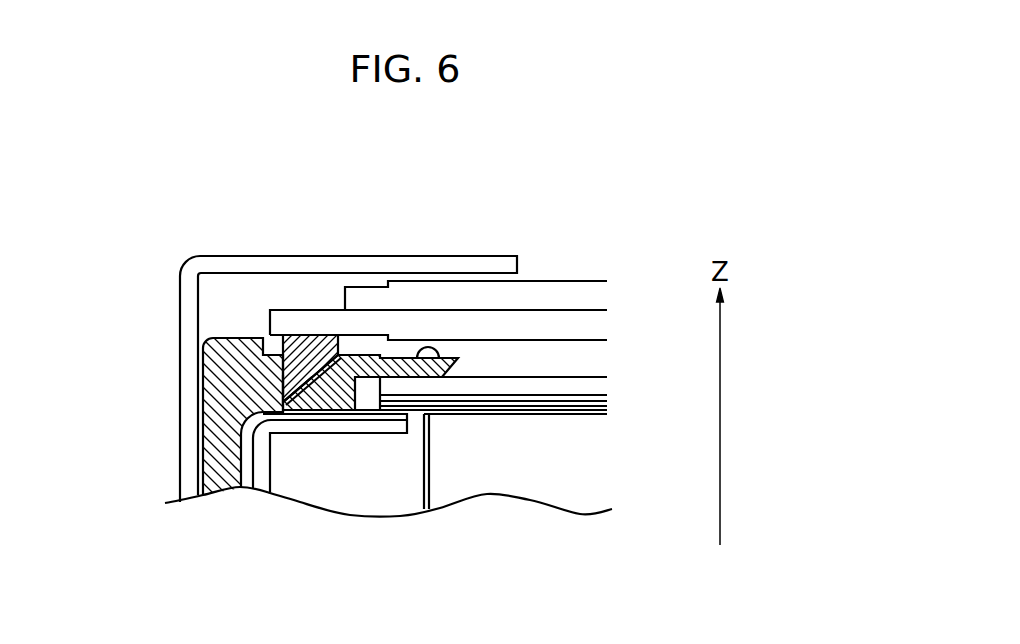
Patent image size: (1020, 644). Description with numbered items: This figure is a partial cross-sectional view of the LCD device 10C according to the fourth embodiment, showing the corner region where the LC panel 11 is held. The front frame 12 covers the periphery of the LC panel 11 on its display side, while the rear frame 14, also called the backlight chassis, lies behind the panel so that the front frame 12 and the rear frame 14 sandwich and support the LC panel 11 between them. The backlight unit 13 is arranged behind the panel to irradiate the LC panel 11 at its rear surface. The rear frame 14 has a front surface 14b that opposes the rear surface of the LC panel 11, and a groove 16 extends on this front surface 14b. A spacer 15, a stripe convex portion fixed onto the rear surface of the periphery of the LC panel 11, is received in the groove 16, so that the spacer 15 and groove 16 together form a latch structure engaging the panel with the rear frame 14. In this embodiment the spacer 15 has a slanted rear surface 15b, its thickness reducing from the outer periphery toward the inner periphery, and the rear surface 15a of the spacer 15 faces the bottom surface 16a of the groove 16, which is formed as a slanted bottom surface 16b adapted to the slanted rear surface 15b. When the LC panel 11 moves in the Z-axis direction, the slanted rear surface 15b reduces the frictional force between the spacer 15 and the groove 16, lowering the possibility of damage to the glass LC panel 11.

The LCD device 10C is at (450, 204).
The LC panel 11 is at (613, 309).
The front frame 12 is at (200, 257).
The backlight unit 13 is at (520, 474).
The rear frame 14 is at (226, 490).
The front surface of the rear frame 14b is at (440, 362).
The spacer 15 is at (306, 335).
The rear surface of the spacer 15a is at (283, 405).
The slanted rear surface 15b is at (343, 412).
The groove 16 is at (280, 370).
The bottom surface of the groove 16a is at (270, 398).
The slanted bottom surface 16b is at (308, 412).